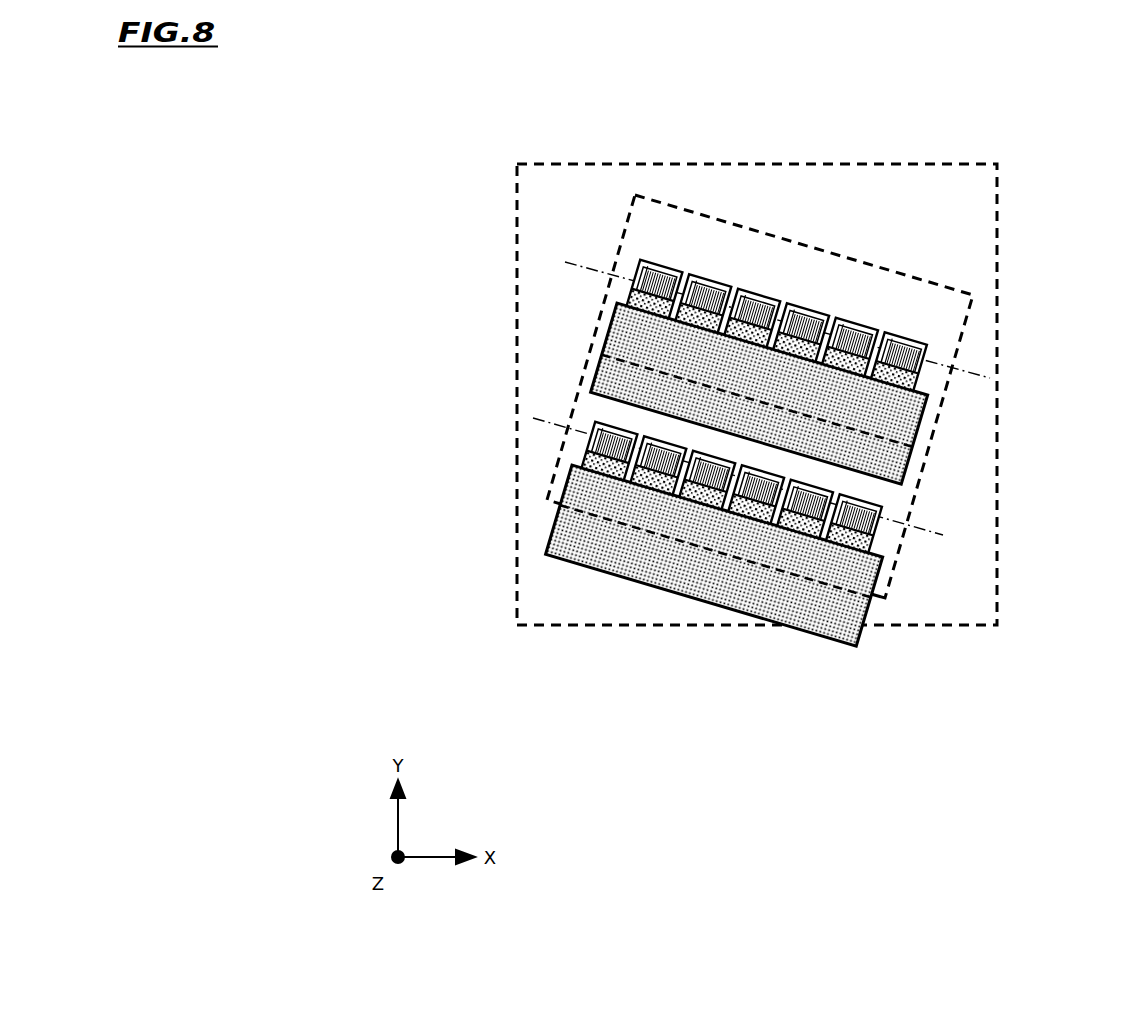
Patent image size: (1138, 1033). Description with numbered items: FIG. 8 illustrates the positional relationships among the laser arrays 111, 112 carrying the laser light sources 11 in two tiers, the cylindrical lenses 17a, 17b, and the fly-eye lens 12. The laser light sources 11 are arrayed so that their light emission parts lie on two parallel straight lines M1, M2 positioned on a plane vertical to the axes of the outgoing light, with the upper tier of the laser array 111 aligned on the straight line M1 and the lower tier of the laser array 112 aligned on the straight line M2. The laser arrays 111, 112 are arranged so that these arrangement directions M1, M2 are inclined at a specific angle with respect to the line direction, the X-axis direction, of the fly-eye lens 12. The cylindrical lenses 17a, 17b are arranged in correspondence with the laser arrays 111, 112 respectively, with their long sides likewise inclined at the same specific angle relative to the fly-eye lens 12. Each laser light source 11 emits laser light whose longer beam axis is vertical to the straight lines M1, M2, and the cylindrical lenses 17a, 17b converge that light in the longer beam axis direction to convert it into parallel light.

The laser light source 11 is at (674, 278).
The fly-eye lens 12 is at (873, 162).
The laser array 111 is at (933, 337).
The laser array 112 is at (630, 583).
The cylindrical lens 17a is at (932, 282).
The cylindrical lens 17b is at (893, 575).
The straight line M1 is at (776, 306).
The straight line M2 is at (736, 464).